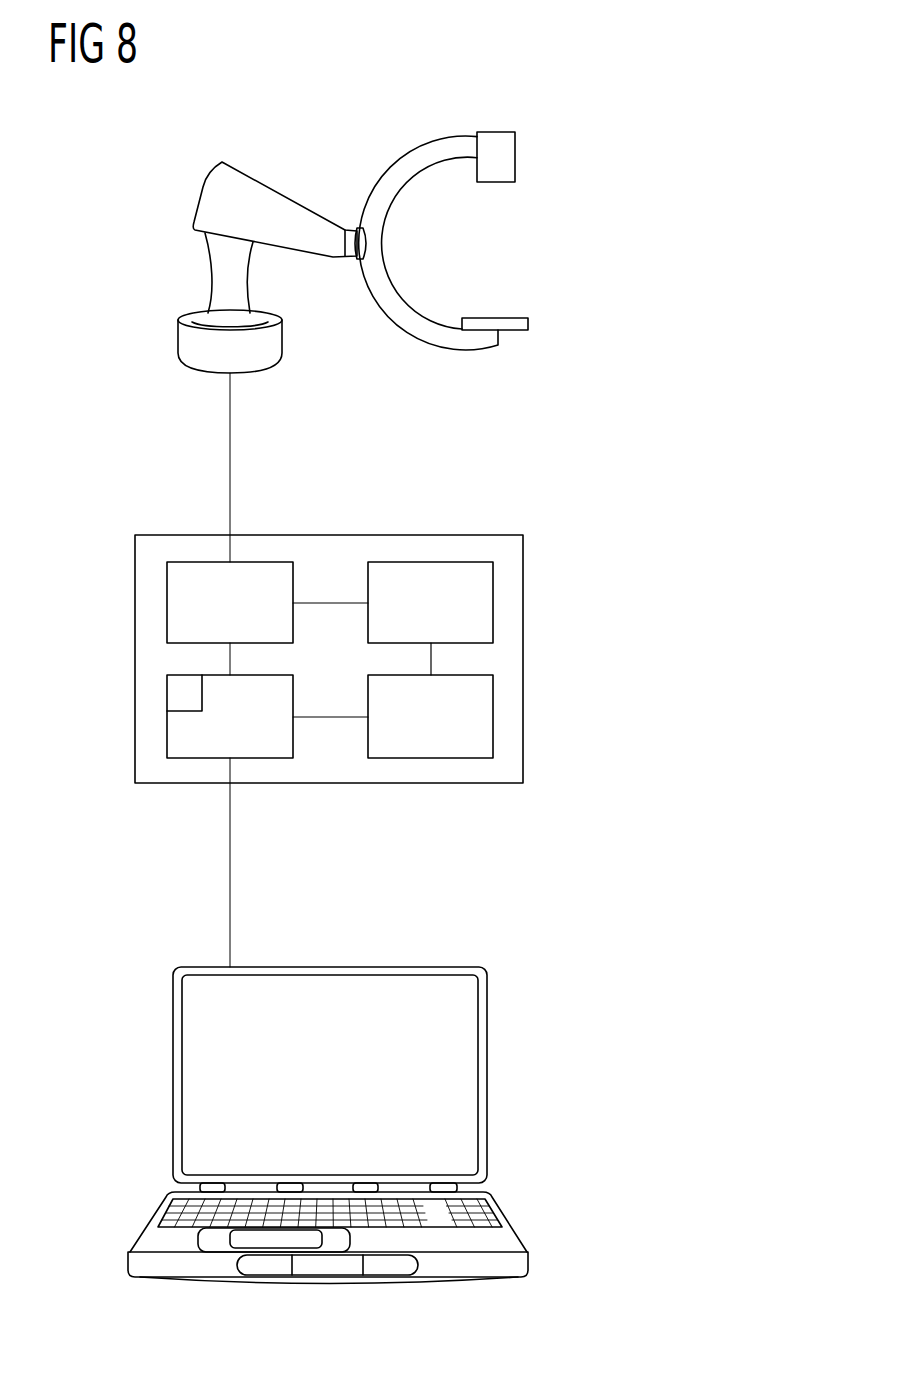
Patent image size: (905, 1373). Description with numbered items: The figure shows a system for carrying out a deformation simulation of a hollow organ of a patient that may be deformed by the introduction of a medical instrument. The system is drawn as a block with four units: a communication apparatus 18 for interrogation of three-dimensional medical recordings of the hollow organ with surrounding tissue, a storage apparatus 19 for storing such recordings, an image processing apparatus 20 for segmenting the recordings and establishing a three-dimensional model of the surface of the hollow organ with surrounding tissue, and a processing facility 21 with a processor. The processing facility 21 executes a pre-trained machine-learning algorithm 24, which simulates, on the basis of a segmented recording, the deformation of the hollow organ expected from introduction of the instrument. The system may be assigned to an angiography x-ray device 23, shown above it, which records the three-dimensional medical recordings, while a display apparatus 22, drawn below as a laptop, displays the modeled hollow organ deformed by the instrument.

The communication apparatus 18 is at (182, 604).
The storage apparatus 19 is at (477, 601).
The image processing apparatus 20 is at (477, 716).
The processing facility 21 is at (182, 737).
The display apparatus 22 is at (487, 1043).
The angiography x-ray device 23 is at (436, 138).
The pre-trained machine-learning algorithm 24 is at (182, 691).